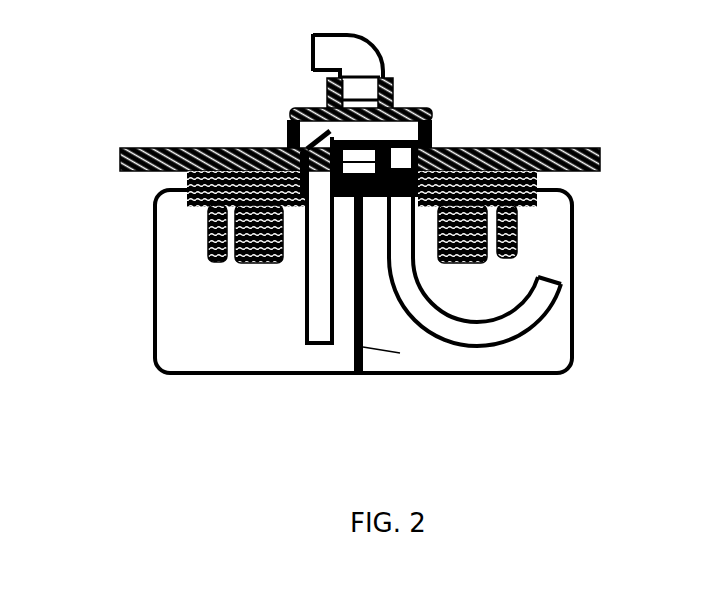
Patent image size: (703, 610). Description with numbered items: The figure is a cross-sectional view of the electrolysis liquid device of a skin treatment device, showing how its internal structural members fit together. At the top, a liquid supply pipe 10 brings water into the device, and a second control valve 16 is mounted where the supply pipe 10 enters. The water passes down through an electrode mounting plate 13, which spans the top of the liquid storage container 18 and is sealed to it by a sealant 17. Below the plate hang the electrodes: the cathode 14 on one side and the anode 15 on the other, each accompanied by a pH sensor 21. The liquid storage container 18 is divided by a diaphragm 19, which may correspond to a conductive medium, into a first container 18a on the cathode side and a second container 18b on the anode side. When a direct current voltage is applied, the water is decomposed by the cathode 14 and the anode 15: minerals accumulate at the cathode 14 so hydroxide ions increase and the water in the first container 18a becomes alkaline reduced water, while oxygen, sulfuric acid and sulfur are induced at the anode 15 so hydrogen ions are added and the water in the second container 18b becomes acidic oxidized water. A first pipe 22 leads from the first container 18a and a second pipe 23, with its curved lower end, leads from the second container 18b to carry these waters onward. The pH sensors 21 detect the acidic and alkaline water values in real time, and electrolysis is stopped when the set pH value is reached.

The liquid supply pipe 10 is at (362, 58).
The second control valve 16 is at (425, 115).
The electrode mounting plate 13 is at (600, 160).
The sealant 17 is at (187, 177).
The pH sensor 21 is at (208, 233).
The cathode 14 is at (260, 263).
The liquid storage container 18 is at (155, 343).
The first container 18a is at (218, 355).
The second container 18b is at (510, 360).
The first pipe 22 is at (313, 317).
The diaphragm 19 is at (400, 353).
The anode 15 is at (465, 263).
The second pipe 23 is at (490, 333).